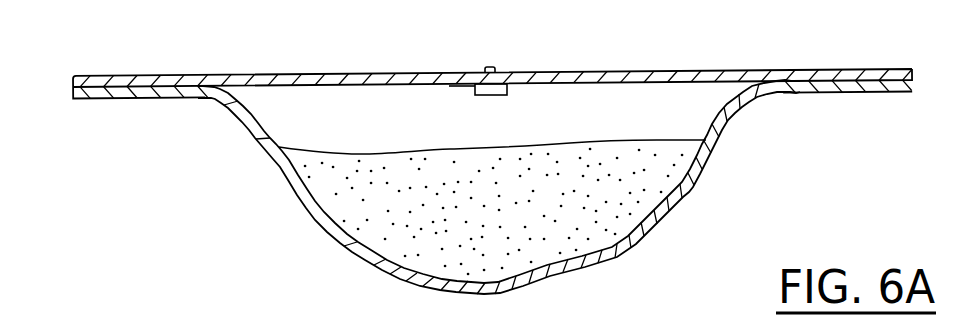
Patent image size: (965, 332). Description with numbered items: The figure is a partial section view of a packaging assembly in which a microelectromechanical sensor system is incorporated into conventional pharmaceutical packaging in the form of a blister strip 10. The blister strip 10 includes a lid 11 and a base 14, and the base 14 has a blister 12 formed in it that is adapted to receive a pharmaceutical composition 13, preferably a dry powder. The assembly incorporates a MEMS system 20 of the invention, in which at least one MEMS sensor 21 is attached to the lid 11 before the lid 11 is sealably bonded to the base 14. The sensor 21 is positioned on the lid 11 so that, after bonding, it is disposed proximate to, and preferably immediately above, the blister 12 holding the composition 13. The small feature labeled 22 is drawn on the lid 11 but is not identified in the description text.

The blister strip 10 is at (678, 40).
The lid 11 is at (197, 74).
The blister 12 is at (316, 224).
The pharmaceutical composition 13 is at (667, 188).
The base 14 is at (847, 96).
The MEMS system 20 is at (505, 80).
The MEMS sensor 21 is at (449, 86).
The vent opening 22 is at (486, 76).